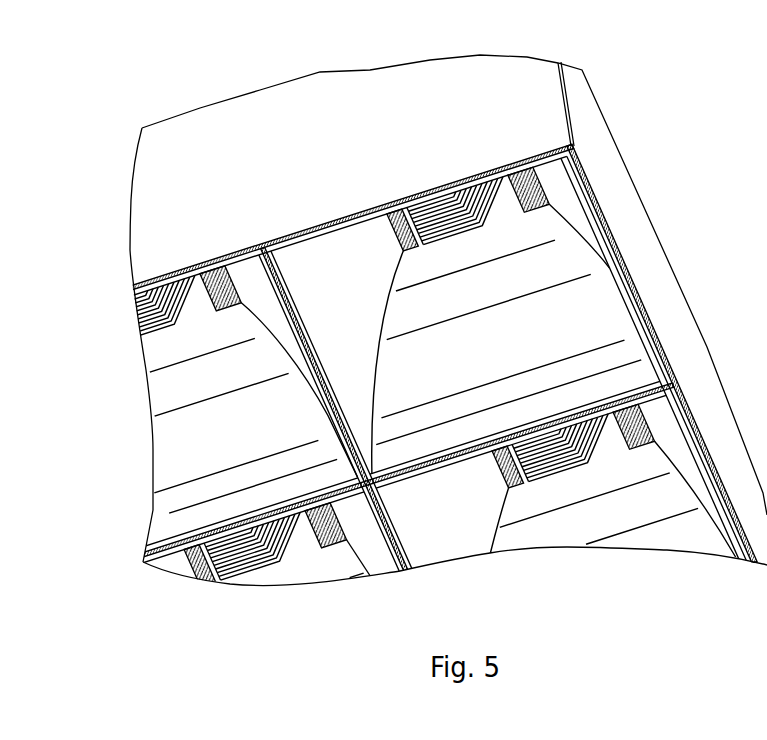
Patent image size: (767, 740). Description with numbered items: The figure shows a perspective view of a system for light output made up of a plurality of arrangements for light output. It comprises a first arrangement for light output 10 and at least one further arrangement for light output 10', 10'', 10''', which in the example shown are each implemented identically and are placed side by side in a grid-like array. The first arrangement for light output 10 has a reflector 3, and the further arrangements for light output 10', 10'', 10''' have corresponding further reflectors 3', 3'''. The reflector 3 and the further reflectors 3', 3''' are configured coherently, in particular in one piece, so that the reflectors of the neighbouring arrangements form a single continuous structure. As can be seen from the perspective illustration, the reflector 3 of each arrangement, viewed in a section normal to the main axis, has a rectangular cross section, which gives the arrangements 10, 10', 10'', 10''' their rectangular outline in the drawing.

The reflector 3 is at (474, 320).
The further reflector 3' is at (218, 401).
The further reflector 3''' is at (588, 515).
The arrangement for light output 10 is at (474, 334).
The further arrangement for light output 10' is at (224, 414).
The further arrangement for light output 10'' is at (279, 566).
The further arrangement for light output 10''' is at (598, 530).